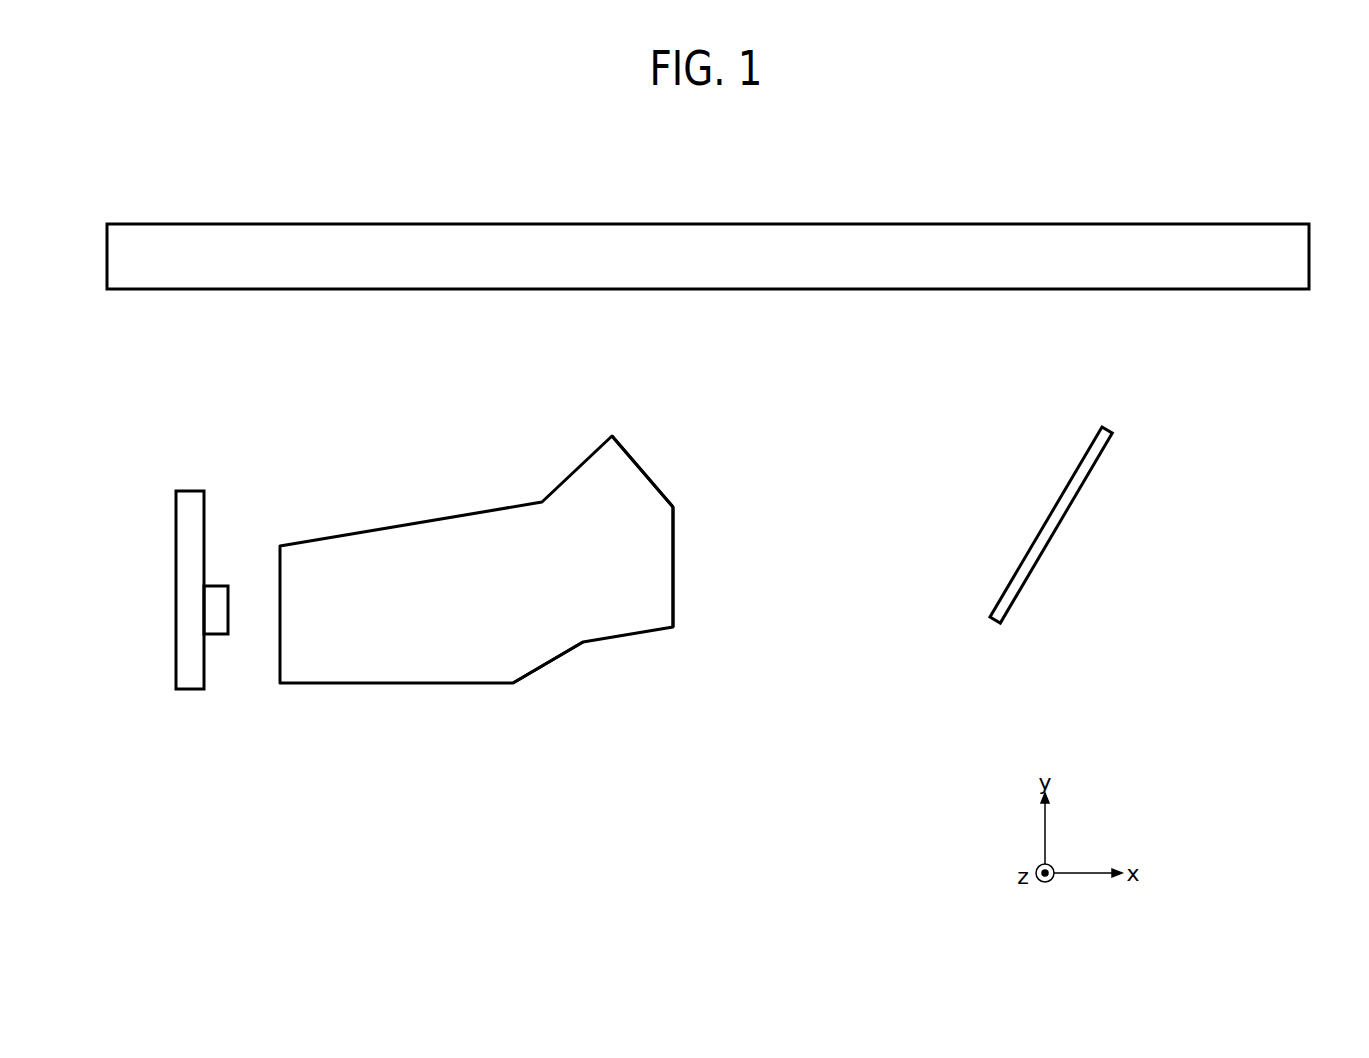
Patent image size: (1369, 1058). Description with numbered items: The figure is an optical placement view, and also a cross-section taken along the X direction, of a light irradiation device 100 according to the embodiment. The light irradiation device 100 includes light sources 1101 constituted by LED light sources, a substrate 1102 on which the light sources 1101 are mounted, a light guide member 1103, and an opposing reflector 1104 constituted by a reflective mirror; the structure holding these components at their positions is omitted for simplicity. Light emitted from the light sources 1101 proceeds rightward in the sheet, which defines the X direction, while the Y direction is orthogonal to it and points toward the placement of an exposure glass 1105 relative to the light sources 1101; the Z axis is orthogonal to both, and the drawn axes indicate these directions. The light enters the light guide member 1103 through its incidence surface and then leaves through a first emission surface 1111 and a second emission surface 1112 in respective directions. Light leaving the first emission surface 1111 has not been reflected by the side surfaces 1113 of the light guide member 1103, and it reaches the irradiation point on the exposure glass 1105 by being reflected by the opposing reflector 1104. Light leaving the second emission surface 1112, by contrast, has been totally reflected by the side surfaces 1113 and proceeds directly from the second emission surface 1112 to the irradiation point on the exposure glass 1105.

The light irradiation device 100 is at (1164, 377).
The light sources 1101 is at (213, 622).
The substrate 1102 is at (190, 682).
The light guide member 1103 is at (440, 538).
The opposing reflector 1104 is at (1053, 535).
The exposure glass 1105 is at (543, 242).
The first emission surface 1111 is at (674, 573).
The second emission surface 1112 is at (648, 472).
The side surfaces 1113 is at (558, 660).